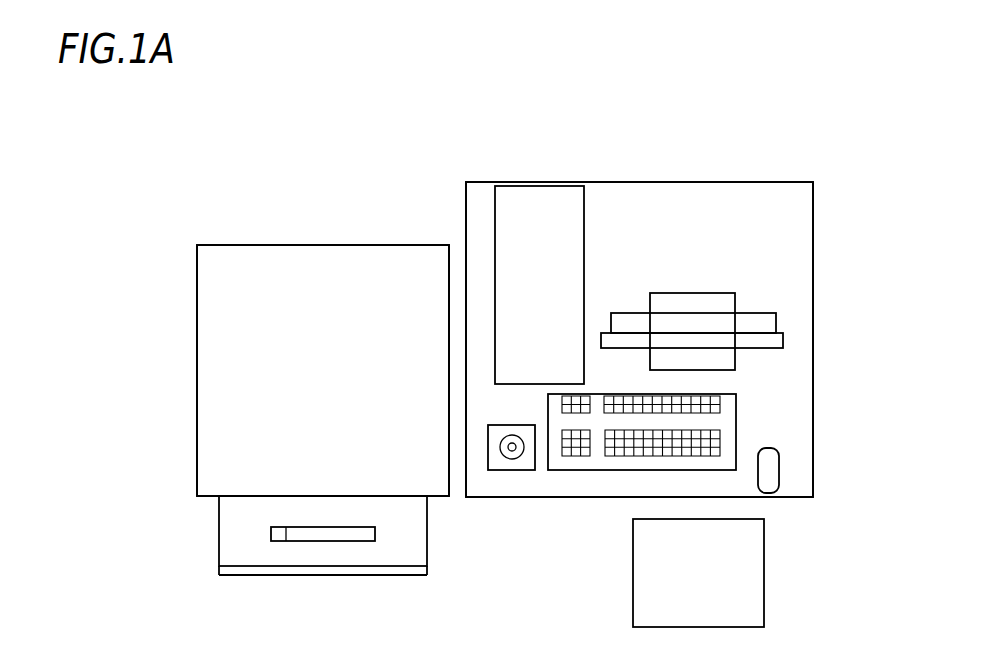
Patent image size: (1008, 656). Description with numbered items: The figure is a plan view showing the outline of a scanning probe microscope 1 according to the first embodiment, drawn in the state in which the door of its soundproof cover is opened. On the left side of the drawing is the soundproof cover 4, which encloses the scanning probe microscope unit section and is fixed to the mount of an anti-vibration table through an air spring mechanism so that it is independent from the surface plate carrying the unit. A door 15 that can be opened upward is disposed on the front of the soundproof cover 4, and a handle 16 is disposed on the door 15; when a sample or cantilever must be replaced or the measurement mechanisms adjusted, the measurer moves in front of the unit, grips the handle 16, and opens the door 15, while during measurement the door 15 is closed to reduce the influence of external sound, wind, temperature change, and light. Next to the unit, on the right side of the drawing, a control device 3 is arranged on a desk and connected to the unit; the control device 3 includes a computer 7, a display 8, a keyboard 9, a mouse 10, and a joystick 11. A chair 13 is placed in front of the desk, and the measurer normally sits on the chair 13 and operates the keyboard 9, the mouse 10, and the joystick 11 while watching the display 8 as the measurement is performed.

The scanning probe microscope 1 is at (413, 228).
The control device 3 is at (654, 172).
The soundproof cover 4 is at (262, 254).
The computer 7 is at (566, 222).
The display 8 is at (757, 338).
The keyboard 9 is at (601, 456).
The mouse 10 is at (772, 474).
The joystick 11 is at (500, 471).
The chair 13 is at (742, 611).
The door 15 is at (240, 552).
The handle 16 is at (377, 529).